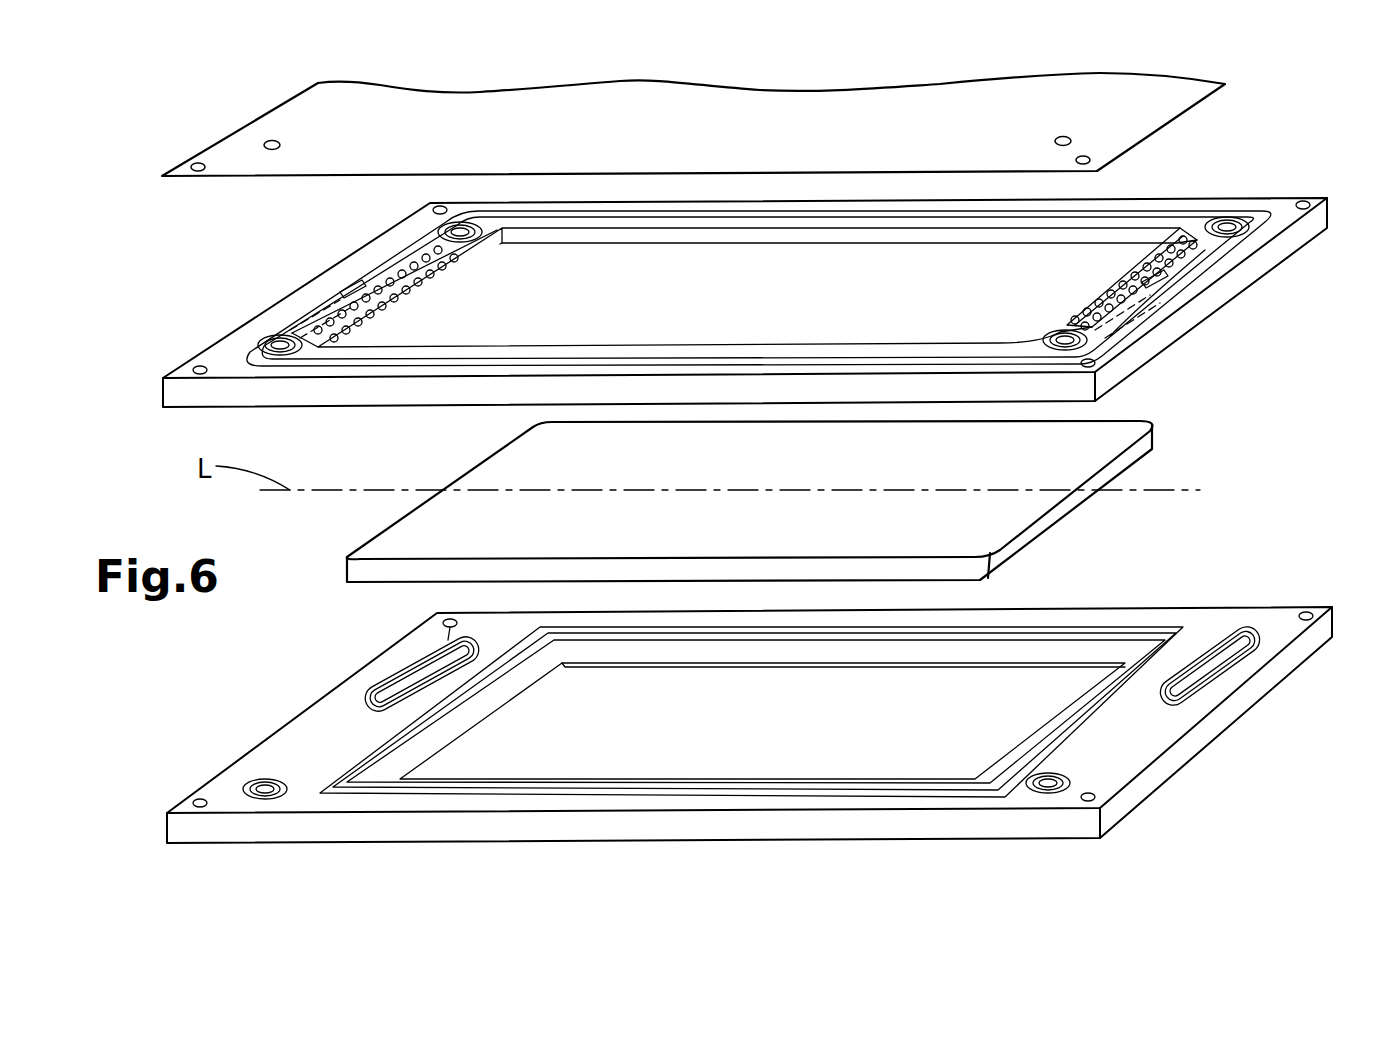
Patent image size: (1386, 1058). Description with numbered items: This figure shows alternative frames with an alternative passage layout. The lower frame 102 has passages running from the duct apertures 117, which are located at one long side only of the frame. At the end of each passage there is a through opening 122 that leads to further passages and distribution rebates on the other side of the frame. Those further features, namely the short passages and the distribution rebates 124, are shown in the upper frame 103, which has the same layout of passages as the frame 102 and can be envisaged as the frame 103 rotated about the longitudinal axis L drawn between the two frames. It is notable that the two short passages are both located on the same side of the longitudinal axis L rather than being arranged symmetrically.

The frame 102 is at (752, 720).
The frame 103 is at (750, 302).
The duct apertures 117 is at (443, 622).
The through opening 122 is at (1163, 700).
The distribution rebates 124 is at (1178, 258).